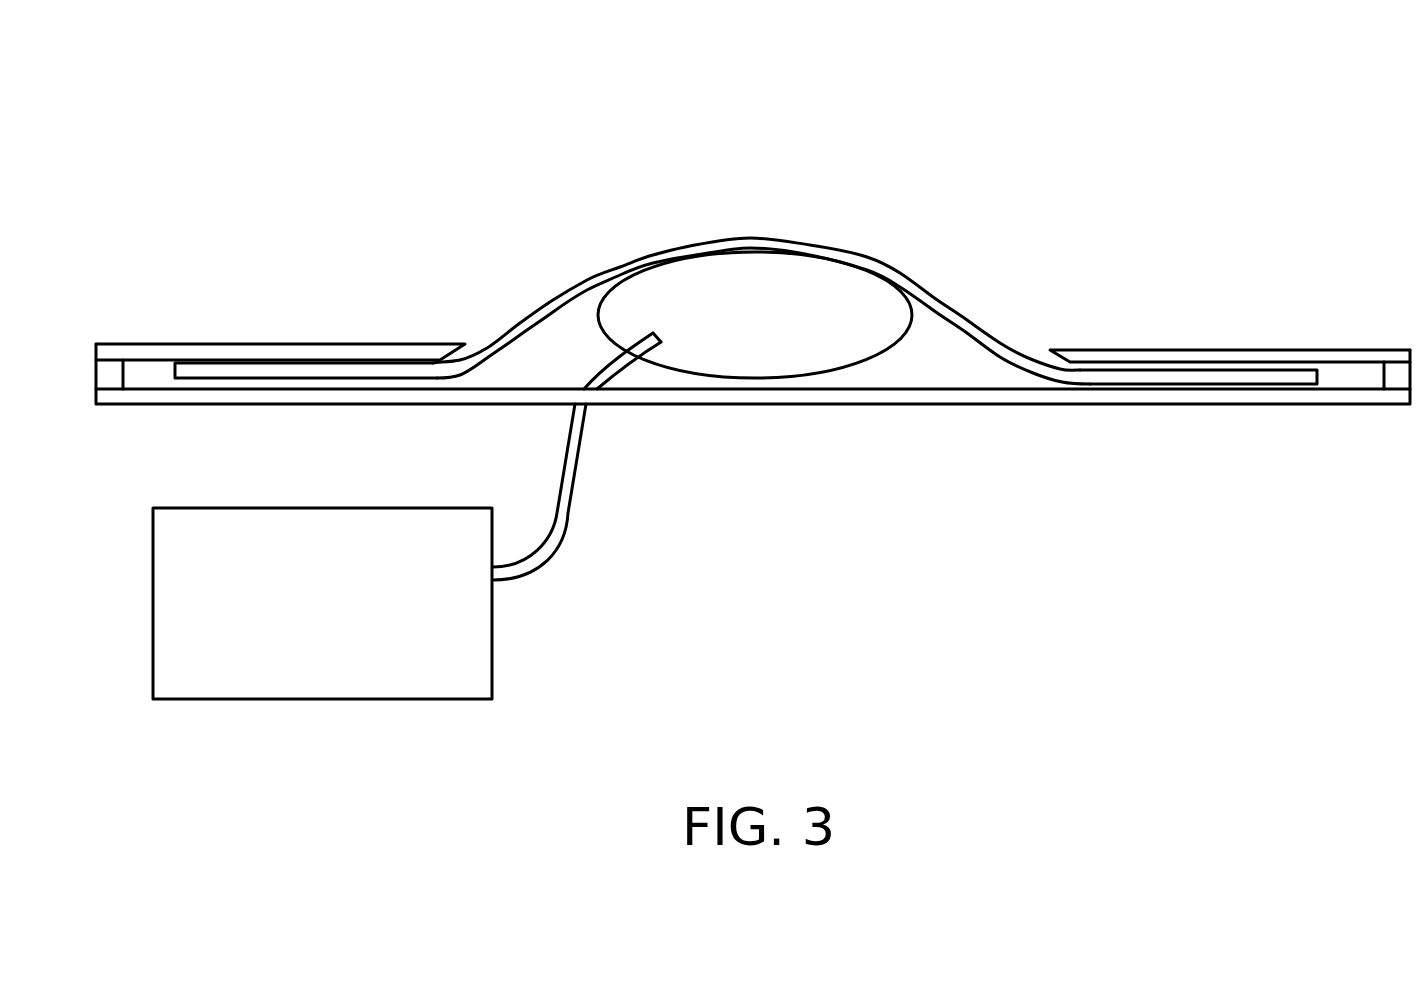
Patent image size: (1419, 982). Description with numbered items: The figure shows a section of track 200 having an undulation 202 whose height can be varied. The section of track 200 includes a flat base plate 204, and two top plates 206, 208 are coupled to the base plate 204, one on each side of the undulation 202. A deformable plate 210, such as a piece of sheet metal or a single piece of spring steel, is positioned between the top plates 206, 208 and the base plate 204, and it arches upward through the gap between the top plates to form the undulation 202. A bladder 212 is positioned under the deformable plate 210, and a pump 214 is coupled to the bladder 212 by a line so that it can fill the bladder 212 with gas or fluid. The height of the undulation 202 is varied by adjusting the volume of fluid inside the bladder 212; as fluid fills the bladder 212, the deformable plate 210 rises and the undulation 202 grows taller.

The section of track 200 is at (701, 70).
The undulation 202 is at (757, 238).
The base plate 204 is at (827, 406).
The top plate 206 is at (296, 344).
The top plate 208 is at (1186, 350).
The deformable plate 210 is at (543, 316).
The bladder 212 is at (775, 329).
The pump 214 is at (302, 632).